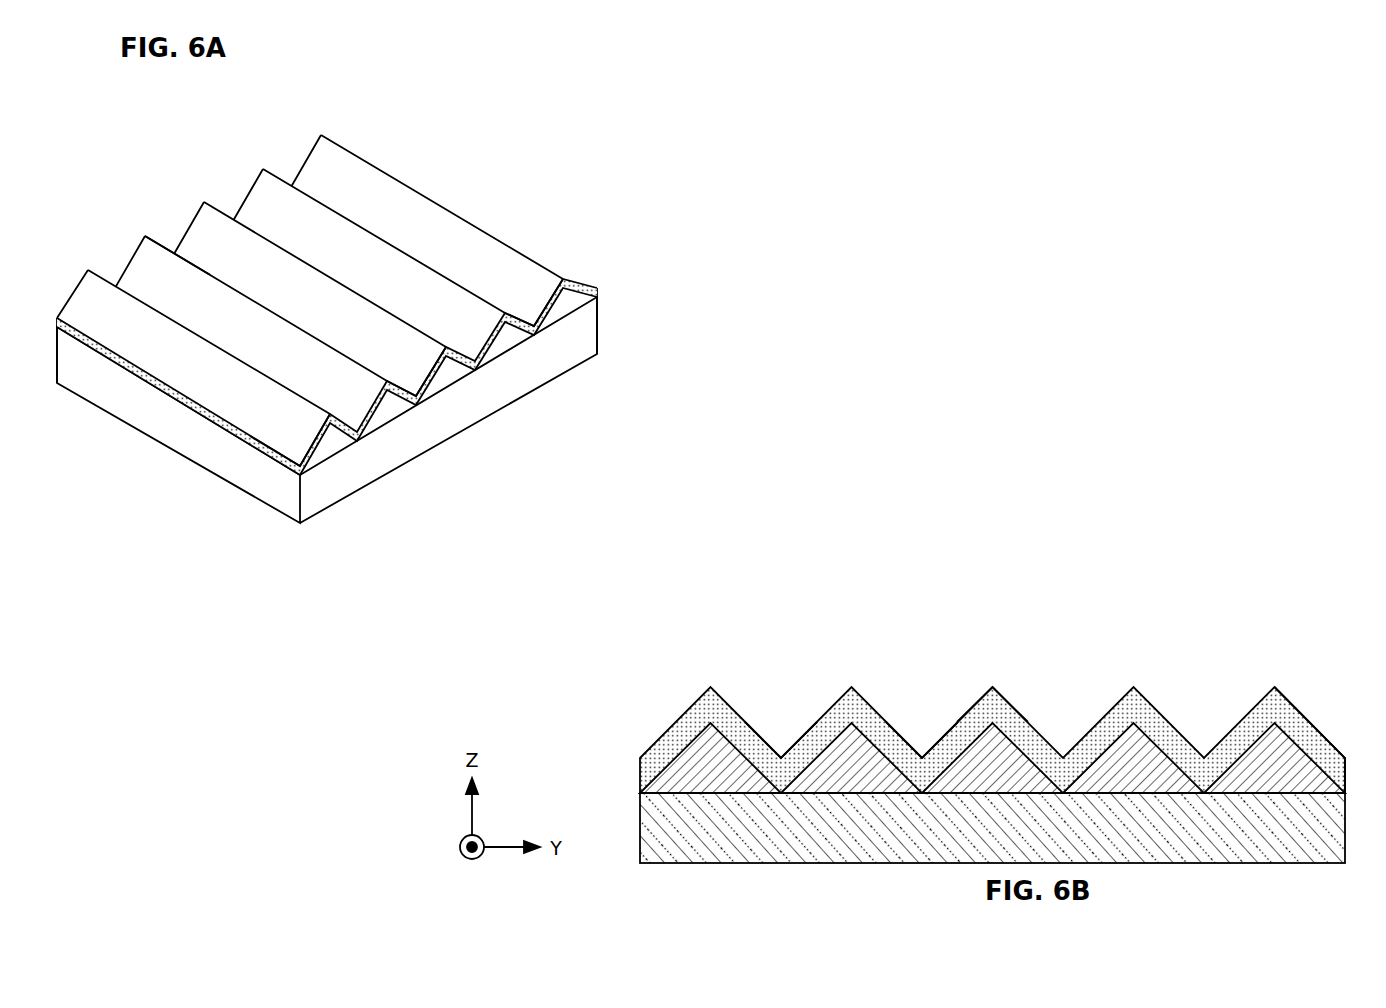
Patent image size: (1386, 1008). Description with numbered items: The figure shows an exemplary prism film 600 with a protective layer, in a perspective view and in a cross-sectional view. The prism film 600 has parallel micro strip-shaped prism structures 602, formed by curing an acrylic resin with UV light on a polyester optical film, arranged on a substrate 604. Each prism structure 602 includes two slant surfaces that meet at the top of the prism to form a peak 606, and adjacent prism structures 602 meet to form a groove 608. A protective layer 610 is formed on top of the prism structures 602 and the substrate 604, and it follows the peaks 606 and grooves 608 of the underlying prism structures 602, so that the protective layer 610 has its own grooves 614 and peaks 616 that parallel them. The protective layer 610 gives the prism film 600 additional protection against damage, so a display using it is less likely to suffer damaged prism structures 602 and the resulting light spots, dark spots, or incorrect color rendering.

In FIG. 6A, the prism film 600 is at (630, 108).
In FIG. 6B, the prism film 600 is at (1045, 500).
In FIG. 6A, the prism structures 602 is at (562, 307).
In FIG. 6B, the prism structures 602 is at (1130, 758).
In FIG. 6A, the substrate 604 is at (490, 383).
In FIG. 6B, the substrate 604 is at (658, 820).
In FIG. 6A, the peak 606 is at (568, 280).
In FIG. 6B, the peak 606 is at (848, 720).
In FIG. 6A, the groove 608 is at (415, 408).
In FIG. 6B, the groove 608 is at (767, 770).
In FIG. 6A, the protective layer 610 is at (283, 463).
In FIG. 6B, the protective layer 610 is at (1313, 740).
In FIG. 6A, the grooves 614 is at (532, 330).
In FIG. 6B, the grooves 614 is at (913, 757).
In FIG. 6A, the peaks 616 is at (160, 247).
In FIG. 6B, the peaks 616 is at (990, 687).